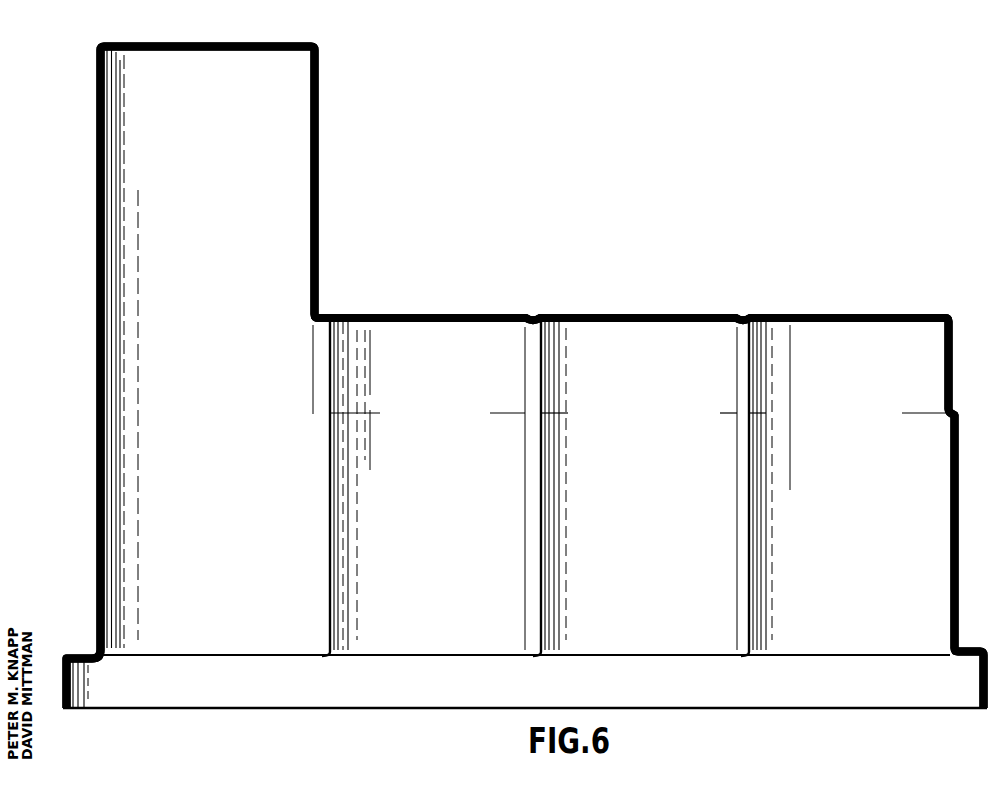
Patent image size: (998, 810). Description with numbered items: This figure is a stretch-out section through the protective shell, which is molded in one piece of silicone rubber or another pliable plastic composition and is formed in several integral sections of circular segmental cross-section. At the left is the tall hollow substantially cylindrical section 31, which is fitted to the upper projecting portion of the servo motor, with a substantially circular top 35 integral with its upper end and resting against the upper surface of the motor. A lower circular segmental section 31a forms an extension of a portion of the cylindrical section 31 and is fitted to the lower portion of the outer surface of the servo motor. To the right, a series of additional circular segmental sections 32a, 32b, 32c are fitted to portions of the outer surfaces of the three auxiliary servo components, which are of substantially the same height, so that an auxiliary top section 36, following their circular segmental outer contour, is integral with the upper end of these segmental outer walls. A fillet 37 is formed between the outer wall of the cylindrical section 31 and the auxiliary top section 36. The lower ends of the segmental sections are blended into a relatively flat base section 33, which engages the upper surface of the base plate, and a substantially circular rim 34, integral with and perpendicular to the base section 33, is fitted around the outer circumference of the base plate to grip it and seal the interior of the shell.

The hollow substantially cylindrical section 31 is at (319, 72).
The lower circular segmental section 31a is at (97, 414).
The circular segmental section 32a is at (419, 489).
The circular segmental section 32b is at (635, 489).
The circular segmental section 32c is at (843, 489).
The base section 33 is at (93, 652).
The circular rim 34 is at (72, 680).
The circular top 35 is at (216, 36).
The auxiliary top section 36 is at (434, 318).
The fillet 37 is at (322, 320).